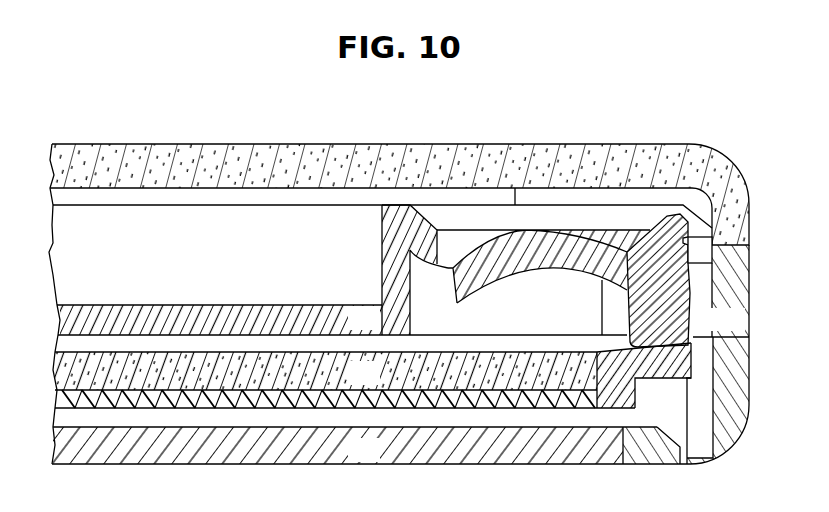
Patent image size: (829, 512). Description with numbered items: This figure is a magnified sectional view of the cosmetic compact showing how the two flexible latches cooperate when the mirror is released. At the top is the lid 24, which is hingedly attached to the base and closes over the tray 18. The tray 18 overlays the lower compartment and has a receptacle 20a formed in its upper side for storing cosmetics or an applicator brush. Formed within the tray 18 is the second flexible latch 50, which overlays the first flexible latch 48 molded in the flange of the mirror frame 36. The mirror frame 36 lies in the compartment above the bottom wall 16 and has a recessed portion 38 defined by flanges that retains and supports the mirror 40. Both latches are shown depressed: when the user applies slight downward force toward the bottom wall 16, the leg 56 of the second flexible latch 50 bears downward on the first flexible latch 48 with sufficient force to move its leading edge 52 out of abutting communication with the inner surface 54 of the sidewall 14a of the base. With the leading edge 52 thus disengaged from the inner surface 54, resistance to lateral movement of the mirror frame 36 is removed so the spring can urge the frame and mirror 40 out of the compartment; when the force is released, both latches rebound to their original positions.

The lid 24 is at (128, 172).
The second flexible latch 50 is at (491, 270).
The receptacle 20a is at (250, 275).
The tray 18 is at (376, 328).
The leg 56 is at (627, 289).
The inner surface 54 is at (749, 268).
The sidewall 14a is at (742, 330).
The leading edge 52 is at (697, 362).
The recessed portion 38 is at (57, 376).
The mirror 40 is at (376, 383).
The mirror frame 36 is at (55, 398).
The bottom wall 16 is at (376, 460).
The first flexible latch 48 is at (657, 353).